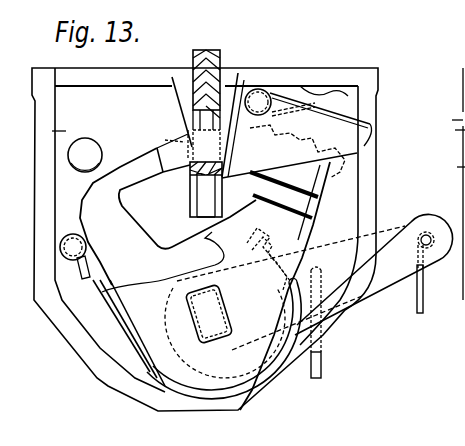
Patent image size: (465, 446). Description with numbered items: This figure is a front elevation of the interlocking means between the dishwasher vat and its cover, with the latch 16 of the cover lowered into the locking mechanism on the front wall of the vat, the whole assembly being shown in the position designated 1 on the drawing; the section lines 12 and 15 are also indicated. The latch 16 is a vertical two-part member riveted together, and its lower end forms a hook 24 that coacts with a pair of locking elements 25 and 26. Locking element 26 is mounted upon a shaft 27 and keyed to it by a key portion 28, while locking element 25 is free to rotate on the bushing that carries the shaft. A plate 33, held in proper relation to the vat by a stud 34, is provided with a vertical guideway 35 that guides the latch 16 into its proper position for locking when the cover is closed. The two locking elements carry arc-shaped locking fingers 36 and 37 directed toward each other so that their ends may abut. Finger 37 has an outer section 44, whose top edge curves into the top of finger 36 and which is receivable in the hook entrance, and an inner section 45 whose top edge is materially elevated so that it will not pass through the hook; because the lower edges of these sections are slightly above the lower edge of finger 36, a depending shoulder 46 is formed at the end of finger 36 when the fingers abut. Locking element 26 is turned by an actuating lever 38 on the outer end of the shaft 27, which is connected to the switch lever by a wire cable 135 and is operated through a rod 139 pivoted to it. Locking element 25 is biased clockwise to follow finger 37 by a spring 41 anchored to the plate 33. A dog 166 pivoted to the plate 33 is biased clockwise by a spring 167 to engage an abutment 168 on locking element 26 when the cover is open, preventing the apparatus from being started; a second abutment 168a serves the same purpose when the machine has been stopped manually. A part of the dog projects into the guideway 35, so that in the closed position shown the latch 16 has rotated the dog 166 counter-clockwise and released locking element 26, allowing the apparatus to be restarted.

The housing 1 is at (80, 340).
The section line 12 is at (238, 4).
The section line 15 is at (206, 26).
The latch 16 is at (220, 60).
The hook 24 is at (184, 170).
The locking element 25 is at (96, 211).
The locking element 26 is at (313, 228).
The shaft 27 is at (212, 343).
The key portion 28 is at (222, 300).
The plate 33 is at (250, 131).
The stud 34 is at (73, 166).
The vertical guideway 35 is at (186, 82).
The locking finger 36 is at (127, 160).
The locking finger 37 is at (180, 172).
The actuating lever 38 is at (393, 280).
The spring 41 is at (150, 394).
The finger section 44 is at (172, 141).
The finger section 45 is at (197, 126).
The depending shoulder 46 is at (168, 173).
The wire cable 135 is at (424, 303).
The rod 139 is at (323, 368).
The dog 166 is at (284, 100).
The spring 167 is at (300, 90).
The abutment 168 is at (292, 124).
The second abutment 168a is at (304, 202).